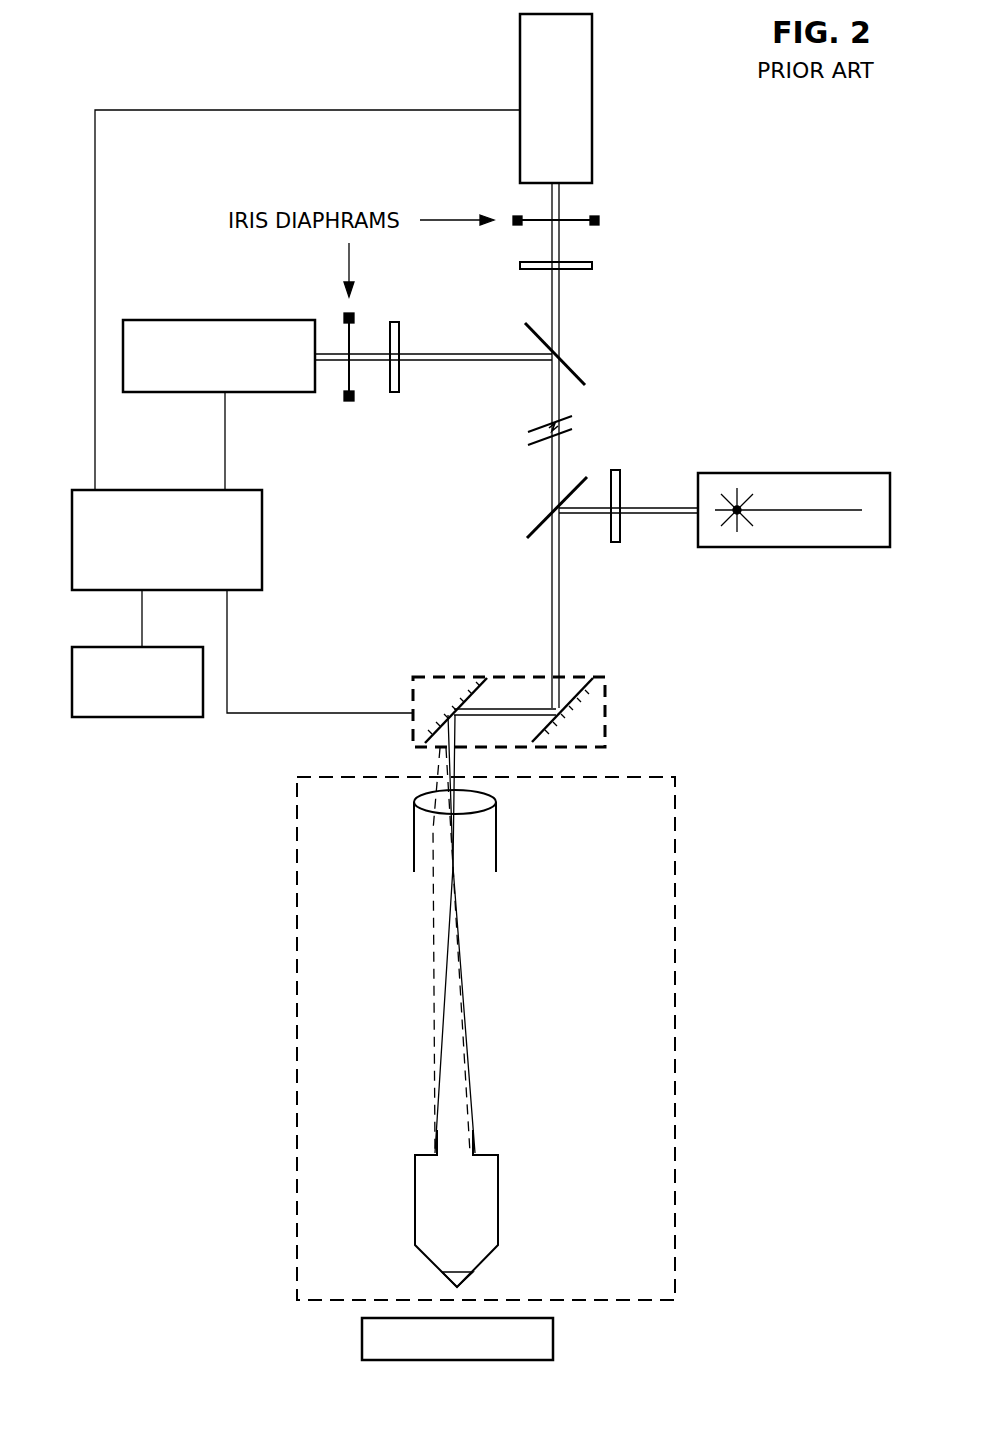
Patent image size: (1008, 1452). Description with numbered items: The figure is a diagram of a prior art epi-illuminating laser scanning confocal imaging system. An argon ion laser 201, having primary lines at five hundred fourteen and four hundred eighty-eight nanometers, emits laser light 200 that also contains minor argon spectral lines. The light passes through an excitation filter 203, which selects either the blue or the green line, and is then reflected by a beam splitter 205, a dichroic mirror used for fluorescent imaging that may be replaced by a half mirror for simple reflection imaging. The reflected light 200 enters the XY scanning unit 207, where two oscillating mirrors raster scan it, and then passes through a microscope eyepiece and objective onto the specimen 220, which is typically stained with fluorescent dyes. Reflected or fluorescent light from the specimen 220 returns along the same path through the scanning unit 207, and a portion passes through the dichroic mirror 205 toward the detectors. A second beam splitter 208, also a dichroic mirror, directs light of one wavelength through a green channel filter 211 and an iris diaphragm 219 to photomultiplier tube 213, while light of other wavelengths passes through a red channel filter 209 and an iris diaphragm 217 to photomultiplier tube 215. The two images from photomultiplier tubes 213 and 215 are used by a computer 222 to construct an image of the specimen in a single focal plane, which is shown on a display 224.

The laser light 200 is at (668, 514).
The argon ion laser 201 is at (805, 474).
The excitation filter 203 is at (618, 470).
The beam splitter 205 is at (540, 522).
The scanning unit 207 is at (462, 677).
The second beam splitter 208 is at (586, 378).
The red channel filter 209 is at (592, 265).
The green channel filter 211 is at (399, 325).
The photomultiplier tube 213 is at (197, 320).
The photomultiplier tube 215 is at (592, 120).
The iris diaphragm 217 is at (597, 222).
The iris diaphragm 219 is at (349, 397).
The specimen 220 is at (362, 1340).
The computer 222 is at (240, 491).
The display 224 is at (138, 718).